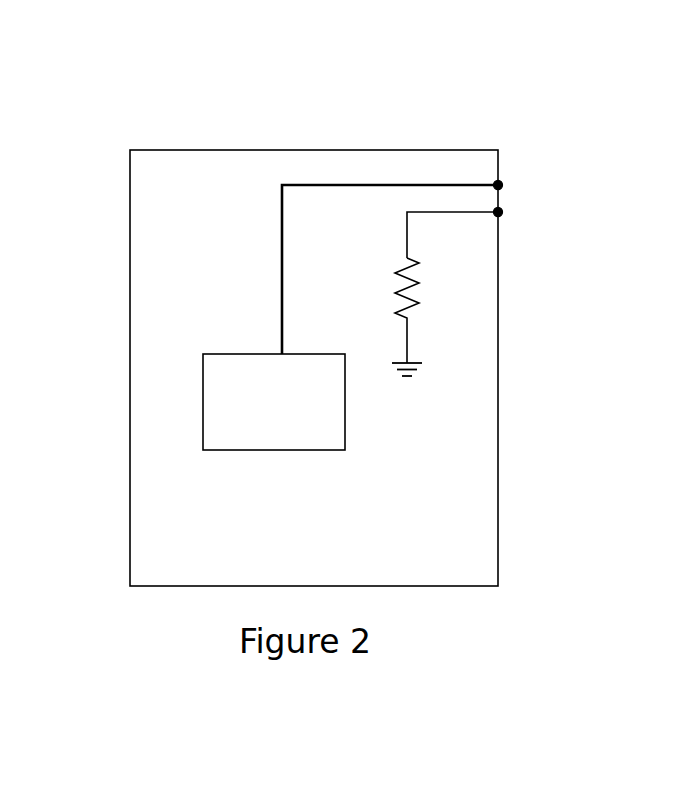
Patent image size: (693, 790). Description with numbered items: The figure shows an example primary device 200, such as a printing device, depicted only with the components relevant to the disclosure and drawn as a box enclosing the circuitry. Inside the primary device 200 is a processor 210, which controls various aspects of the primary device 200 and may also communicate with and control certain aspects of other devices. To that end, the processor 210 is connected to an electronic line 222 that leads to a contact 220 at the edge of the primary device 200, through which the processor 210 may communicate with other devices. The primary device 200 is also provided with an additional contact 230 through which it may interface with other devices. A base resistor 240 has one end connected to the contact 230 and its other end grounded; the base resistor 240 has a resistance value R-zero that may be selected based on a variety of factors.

The primary device 200 is at (458, 113).
The processor 210 is at (274, 402).
The contact 220 is at (503, 184).
The electronic line 222 is at (333, 185).
The contact 230 is at (502, 215).
The base resistor 240 is at (420, 283).